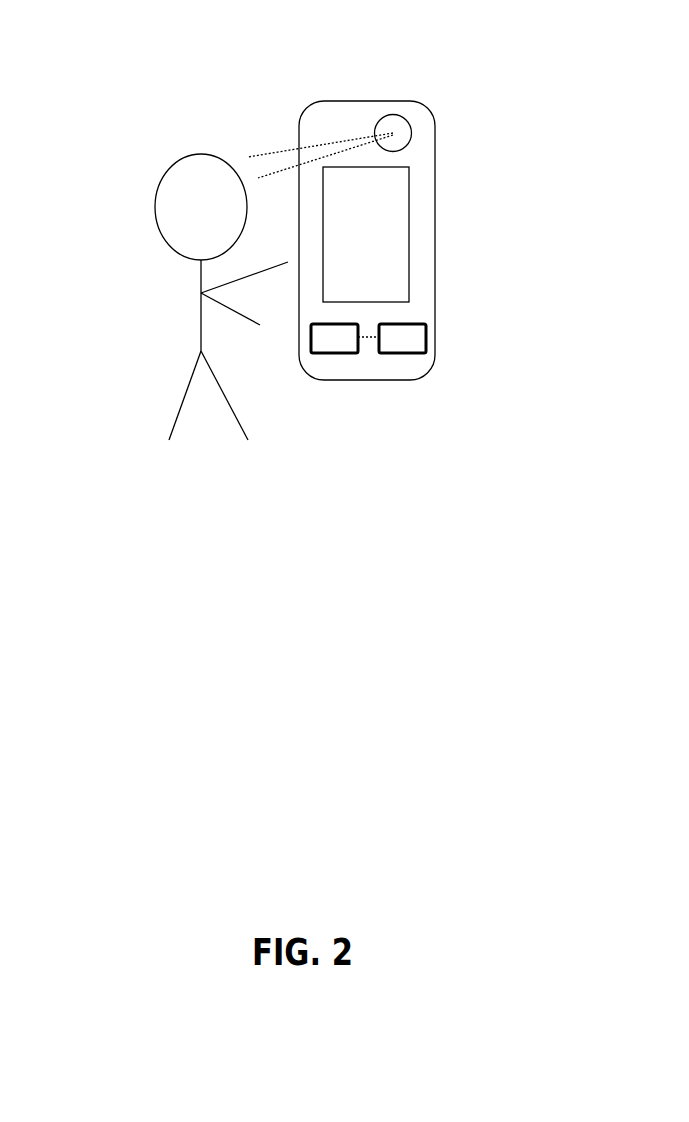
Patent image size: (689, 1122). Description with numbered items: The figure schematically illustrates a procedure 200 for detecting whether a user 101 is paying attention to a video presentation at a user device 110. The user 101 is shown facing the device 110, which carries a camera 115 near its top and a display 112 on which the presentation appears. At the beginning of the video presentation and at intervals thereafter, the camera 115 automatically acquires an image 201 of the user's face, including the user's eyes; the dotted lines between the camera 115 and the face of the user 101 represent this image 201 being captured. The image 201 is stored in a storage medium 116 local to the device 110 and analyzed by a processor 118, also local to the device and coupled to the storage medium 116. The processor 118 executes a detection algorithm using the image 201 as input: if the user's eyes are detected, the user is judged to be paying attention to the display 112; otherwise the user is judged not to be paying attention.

The procedure 200 is at (287, 466).
The user 101 is at (136, 176).
The user device 110 is at (347, 101).
The camera 115 is at (413, 133).
The image 201 is at (271, 158).
The display 112 is at (409, 263).
The storage medium 116 is at (335, 353).
The processor 118 is at (403, 353).